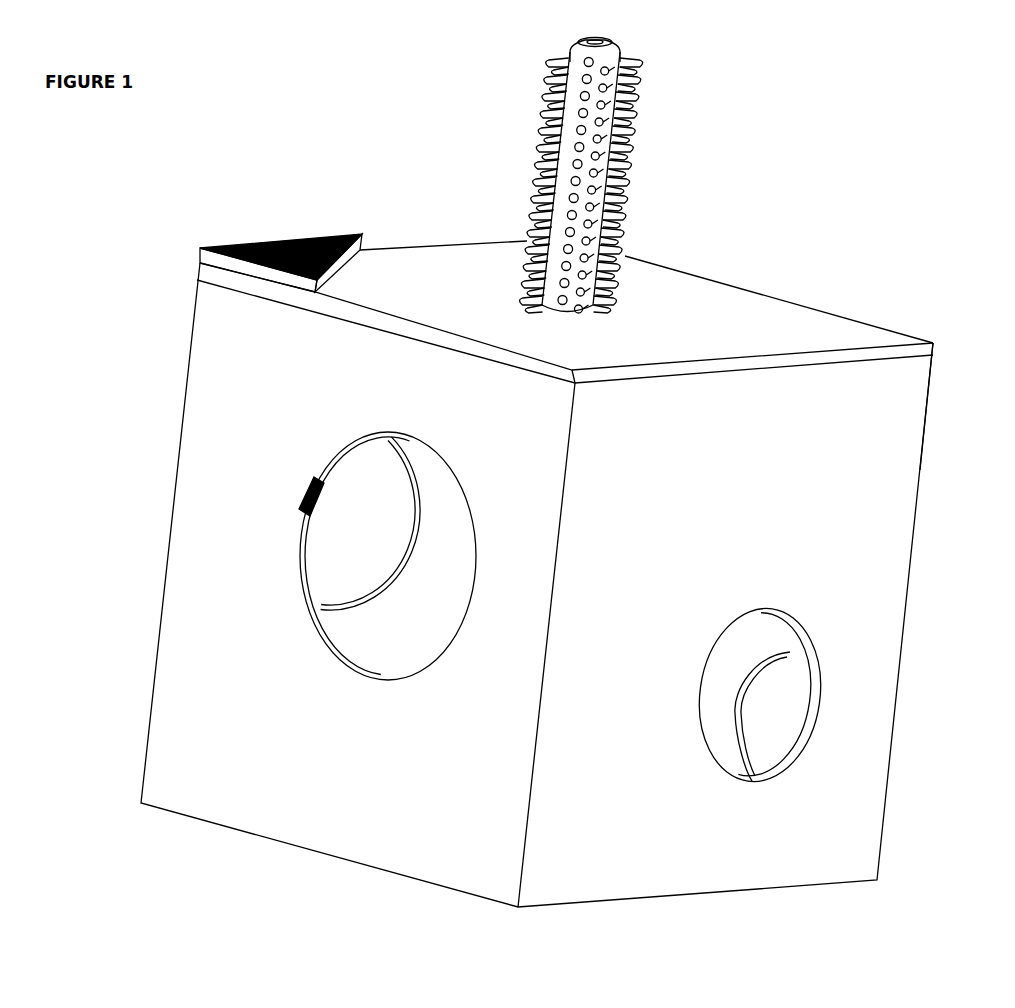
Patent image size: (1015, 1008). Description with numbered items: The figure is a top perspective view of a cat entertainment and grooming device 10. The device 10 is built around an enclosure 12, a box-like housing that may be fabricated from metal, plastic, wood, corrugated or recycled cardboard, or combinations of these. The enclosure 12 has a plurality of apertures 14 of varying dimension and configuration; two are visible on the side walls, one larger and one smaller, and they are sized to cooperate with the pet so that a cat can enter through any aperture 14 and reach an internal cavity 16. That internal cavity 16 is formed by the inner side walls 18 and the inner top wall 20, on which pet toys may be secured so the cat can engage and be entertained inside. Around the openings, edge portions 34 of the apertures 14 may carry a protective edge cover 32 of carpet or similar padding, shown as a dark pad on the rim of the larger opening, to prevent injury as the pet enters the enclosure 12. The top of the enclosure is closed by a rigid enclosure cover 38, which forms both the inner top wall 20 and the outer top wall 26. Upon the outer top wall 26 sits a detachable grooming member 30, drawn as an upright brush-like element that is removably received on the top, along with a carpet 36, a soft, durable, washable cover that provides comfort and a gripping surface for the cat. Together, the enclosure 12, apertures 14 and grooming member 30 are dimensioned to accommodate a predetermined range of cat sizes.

The cat entertainment and grooming device 10 is at (786, 210).
The enclosure 12 is at (887, 446).
The apertures 14 is at (362, 455).
The internal cavity 16 is at (430, 650).
The inner side walls 18 is at (417, 517).
The inner top wall 20 is at (805, 365).
The outer top wall 26 is at (813, 326).
The grooming members 30 is at (620, 56).
The protective edge cover 32 is at (302, 480).
The edge portions 34 is at (298, 553).
The carpet 36 is at (278, 238).
The rigid enclosure cover 38 is at (935, 347).